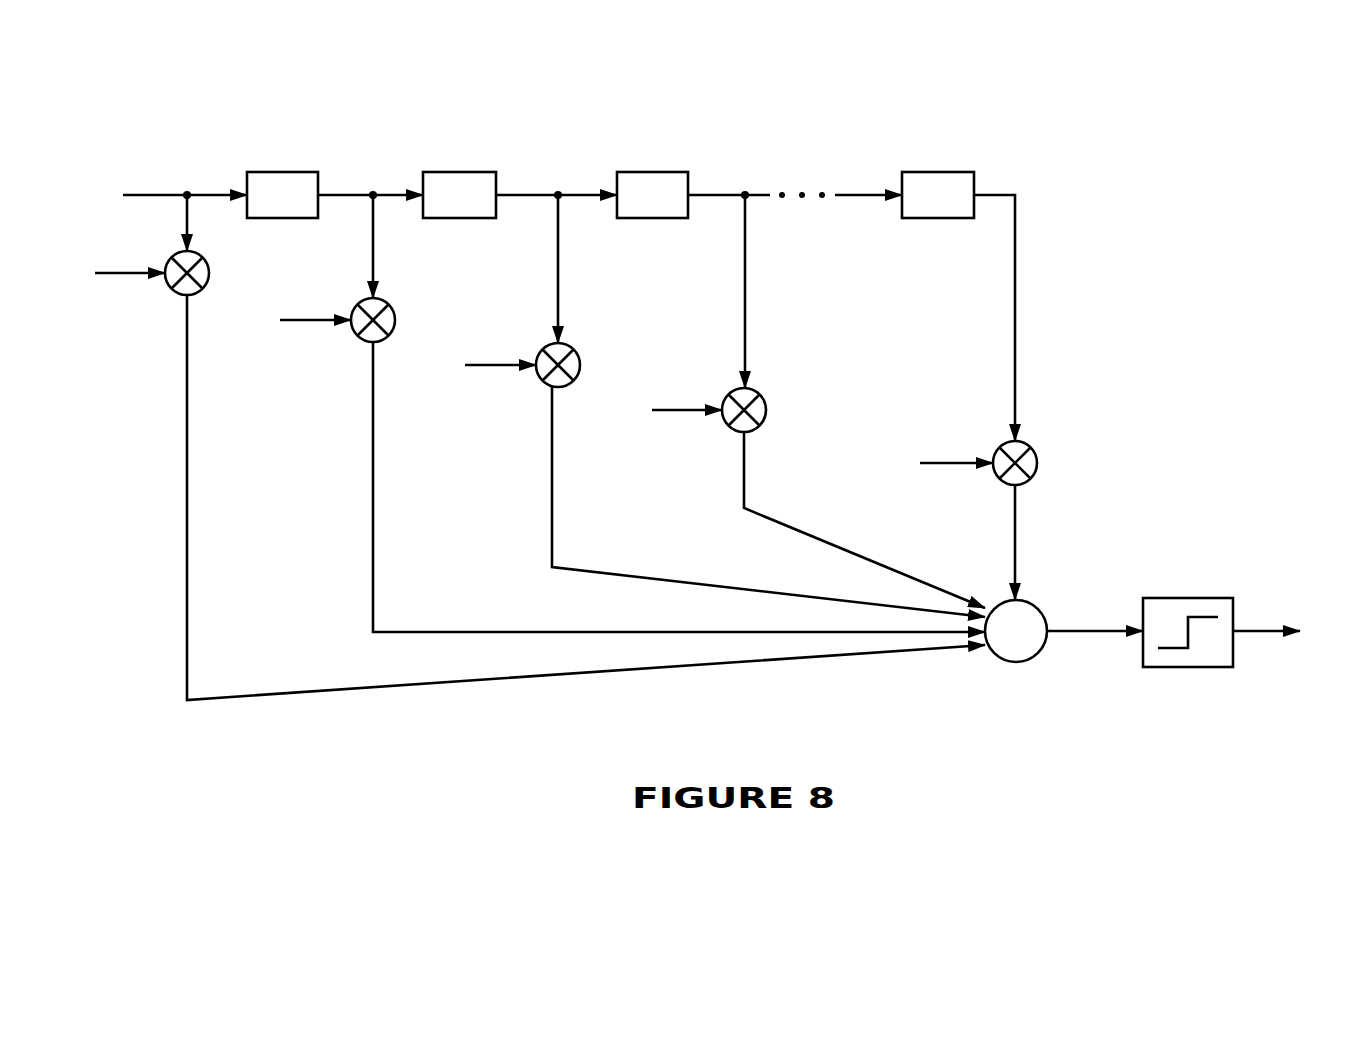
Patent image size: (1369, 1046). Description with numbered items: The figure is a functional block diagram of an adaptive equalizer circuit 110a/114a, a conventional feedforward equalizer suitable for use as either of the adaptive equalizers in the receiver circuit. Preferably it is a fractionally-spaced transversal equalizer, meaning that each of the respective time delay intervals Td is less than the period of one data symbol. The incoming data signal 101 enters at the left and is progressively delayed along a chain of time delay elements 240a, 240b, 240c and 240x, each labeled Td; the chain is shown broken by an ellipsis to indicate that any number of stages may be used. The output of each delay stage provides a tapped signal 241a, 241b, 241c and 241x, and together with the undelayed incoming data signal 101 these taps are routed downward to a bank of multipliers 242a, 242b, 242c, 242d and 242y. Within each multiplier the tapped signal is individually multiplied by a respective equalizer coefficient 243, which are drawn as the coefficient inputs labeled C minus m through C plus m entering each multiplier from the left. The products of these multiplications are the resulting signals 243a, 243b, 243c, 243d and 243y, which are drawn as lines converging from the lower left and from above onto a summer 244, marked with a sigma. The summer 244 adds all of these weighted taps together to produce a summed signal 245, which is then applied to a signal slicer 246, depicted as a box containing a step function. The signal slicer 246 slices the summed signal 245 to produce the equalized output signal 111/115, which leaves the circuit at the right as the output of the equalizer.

The incoming data signal 101 is at (157, 191).
The adaptive equalizer circuit 110a is at (1233, 224).
The adaptive equalizer circuit 114a is at (1230, 220).
The equalized output signal 111 is at (1286, 666).
The equalized output signal 115 is at (1268, 656).
The time delay element 240a is at (278, 172).
The time delay element 240b is at (454, 172).
The time delay element 240c is at (648, 172).
The time delay element 240x is at (934, 172).
The tapped signal 241a is at (352, 193).
The tapped signal 241b is at (529, 193).
The tapped signal 241c is at (724, 193).
The tapped signal 241x is at (994, 193).
The multiplier 242a is at (209, 270).
The multiplier 242b is at (395, 317).
The multiplier 242c is at (580, 362).
The multiplier 242d is at (766, 408).
The multiplier 242y is at (1037, 462).
The equalizer coefficient 243 is at (138, 278).
The resulting signal 243a is at (189, 615).
The resulting signal 243b is at (375, 570).
The resulting signal 243c is at (554, 527).
The resulting signal 243d is at (800, 538).
The resulting signal 243y is at (1017, 530).
The summer 244 is at (1046, 612).
The summed signal 245 is at (1085, 638).
The signal slicer 246 is at (1200, 598).